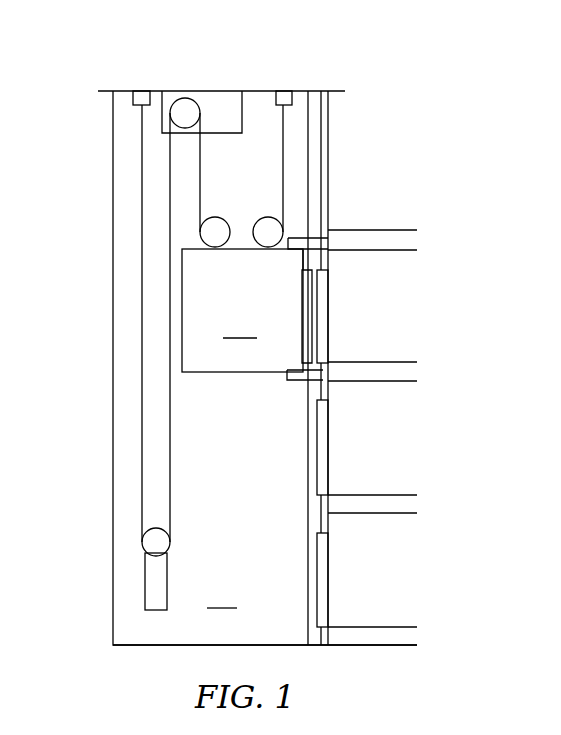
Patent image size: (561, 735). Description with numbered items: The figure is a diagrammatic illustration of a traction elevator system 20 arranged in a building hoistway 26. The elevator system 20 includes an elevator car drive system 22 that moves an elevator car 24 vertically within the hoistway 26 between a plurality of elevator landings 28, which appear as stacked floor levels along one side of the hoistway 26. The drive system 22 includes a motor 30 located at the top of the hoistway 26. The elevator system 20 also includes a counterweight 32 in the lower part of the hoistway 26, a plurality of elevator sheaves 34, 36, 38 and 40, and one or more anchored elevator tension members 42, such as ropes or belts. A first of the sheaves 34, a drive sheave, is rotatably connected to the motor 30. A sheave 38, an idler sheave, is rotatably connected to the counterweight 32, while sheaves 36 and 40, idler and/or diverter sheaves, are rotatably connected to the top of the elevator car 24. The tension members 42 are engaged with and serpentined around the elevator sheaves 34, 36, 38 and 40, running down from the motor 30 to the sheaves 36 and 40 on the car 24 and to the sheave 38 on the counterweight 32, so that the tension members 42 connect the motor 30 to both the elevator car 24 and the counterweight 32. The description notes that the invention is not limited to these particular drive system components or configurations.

The elevator system 20 is at (297, 131).
The elevator car drive system 22 is at (262, 107).
The elevator car 24 is at (255, 309).
The building hoistway 26 is at (265, 613).
The elevator landings 28 is at (360, 318).
The motor 30 is at (170, 95).
The counterweight 32 is at (145, 588).
The drive sheave 34 is at (185, 98).
The idler and/or diverter sheave 36 is at (219, 218).
The idler sheave 38 is at (143, 546).
The idler and/or diverter sheave 40 is at (272, 218).
The elevator tension members 42 is at (142, 430).